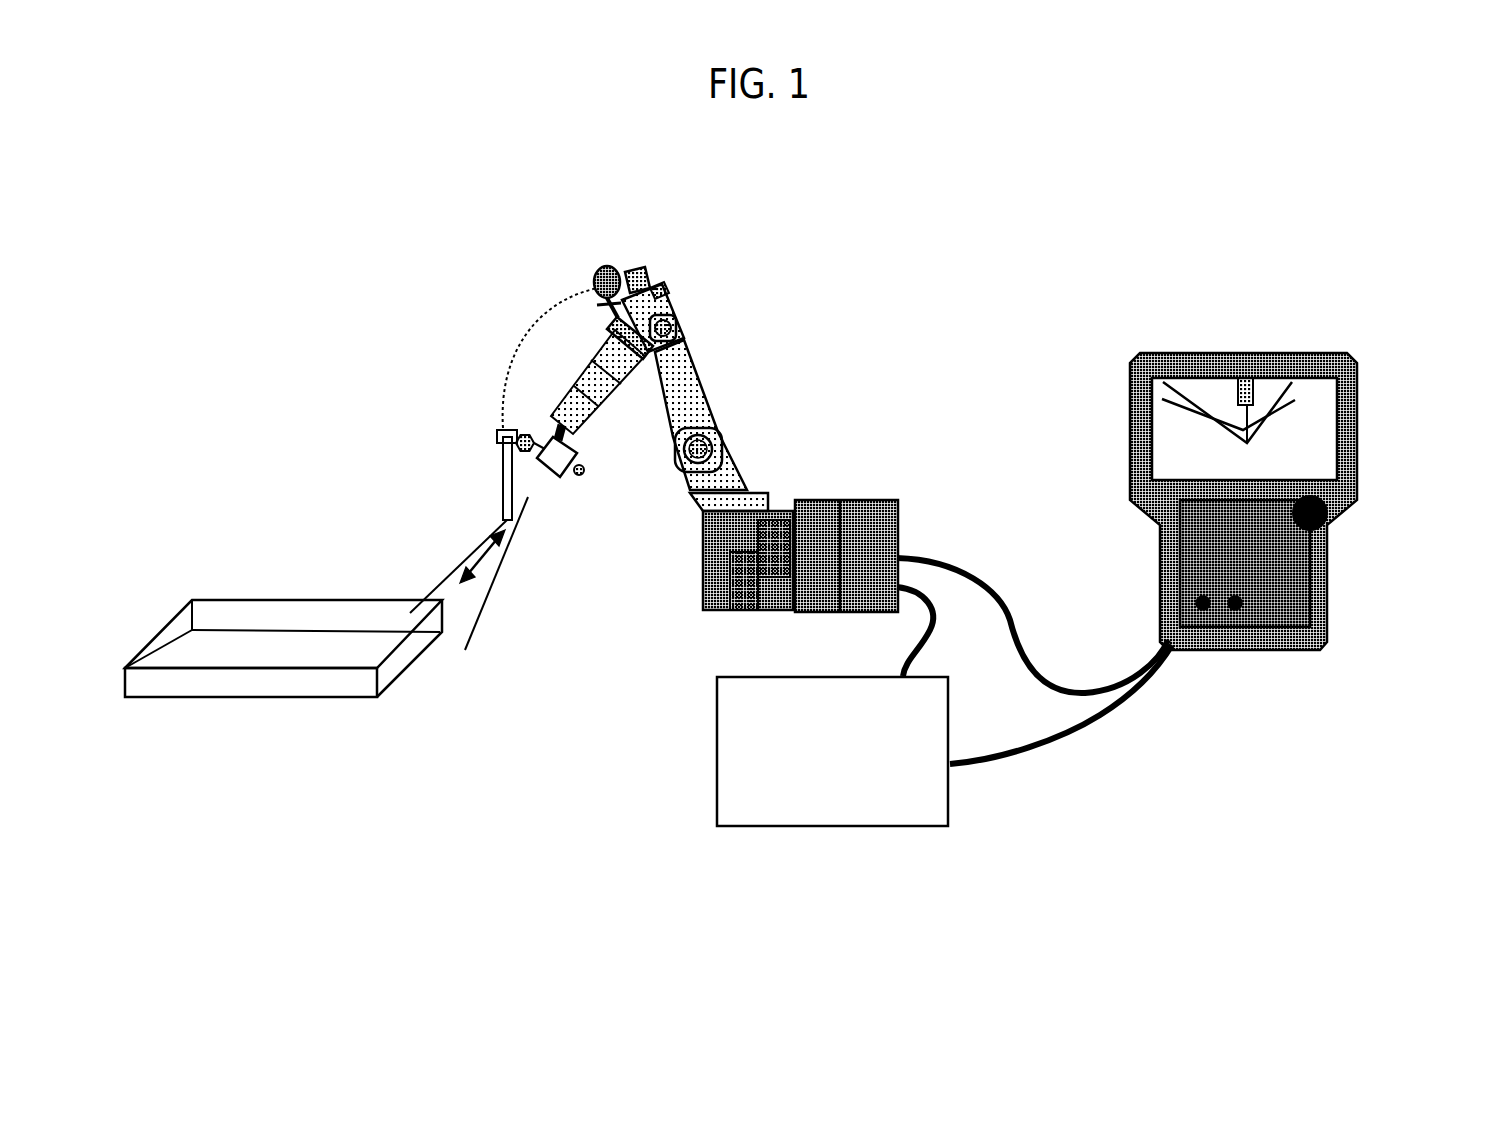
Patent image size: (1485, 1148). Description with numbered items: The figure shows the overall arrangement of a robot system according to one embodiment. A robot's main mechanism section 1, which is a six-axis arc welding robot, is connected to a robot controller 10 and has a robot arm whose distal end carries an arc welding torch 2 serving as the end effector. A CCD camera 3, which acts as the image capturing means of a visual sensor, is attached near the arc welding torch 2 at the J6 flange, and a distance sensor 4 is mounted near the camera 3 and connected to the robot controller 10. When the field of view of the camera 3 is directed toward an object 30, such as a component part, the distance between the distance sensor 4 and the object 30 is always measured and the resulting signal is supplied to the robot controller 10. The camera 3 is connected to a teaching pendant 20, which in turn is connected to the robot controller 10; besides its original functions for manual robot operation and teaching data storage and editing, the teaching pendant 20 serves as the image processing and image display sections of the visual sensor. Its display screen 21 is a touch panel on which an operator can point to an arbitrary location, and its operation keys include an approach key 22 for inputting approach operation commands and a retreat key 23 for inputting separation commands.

The robot's main mechanism section 1 is at (738, 392).
The arc welding torch 2 is at (500, 462).
The CCD camera 3 is at (560, 478).
The distance sensor 4 is at (585, 475).
The robot controller 10 is at (800, 826).
The teaching pendant 20 is at (1290, 560).
The display screen 21 is at (1315, 427).
The approach key 22 is at (1203, 603).
The retreat key 23 is at (1235, 603).
The object 30 is at (233, 685).